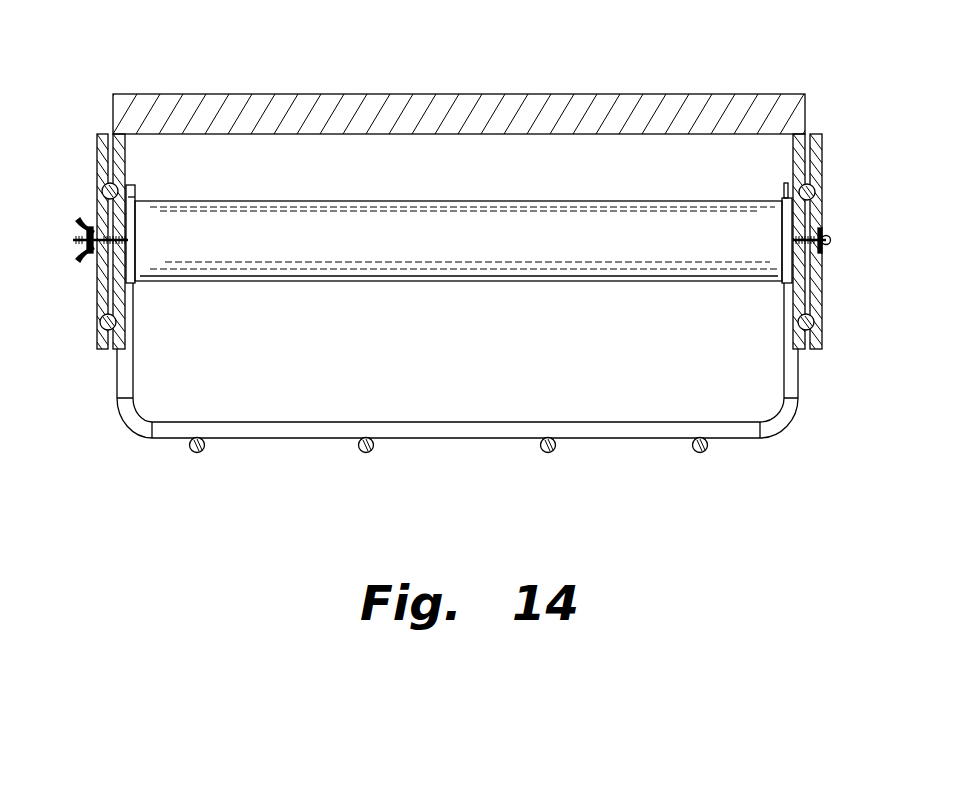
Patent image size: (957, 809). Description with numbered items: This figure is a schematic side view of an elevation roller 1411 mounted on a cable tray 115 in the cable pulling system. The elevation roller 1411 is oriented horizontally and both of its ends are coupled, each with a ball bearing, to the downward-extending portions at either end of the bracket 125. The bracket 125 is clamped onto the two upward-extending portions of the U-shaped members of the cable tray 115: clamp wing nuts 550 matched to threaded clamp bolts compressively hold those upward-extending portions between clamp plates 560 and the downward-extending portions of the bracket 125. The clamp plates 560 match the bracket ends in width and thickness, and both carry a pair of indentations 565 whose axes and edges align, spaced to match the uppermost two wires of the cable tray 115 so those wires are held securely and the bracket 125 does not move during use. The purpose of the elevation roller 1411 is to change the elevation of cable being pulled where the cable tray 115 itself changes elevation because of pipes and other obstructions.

The bracket 125 is at (283, 93).
The cable tray 115 is at (128, 432).
The clamp plates 560 is at (103, 132).
The pair of indentations 565 is at (100, 185).
The clamp wing nuts 550 is at (72, 218).
The elevation roller 1411 is at (200, 283).